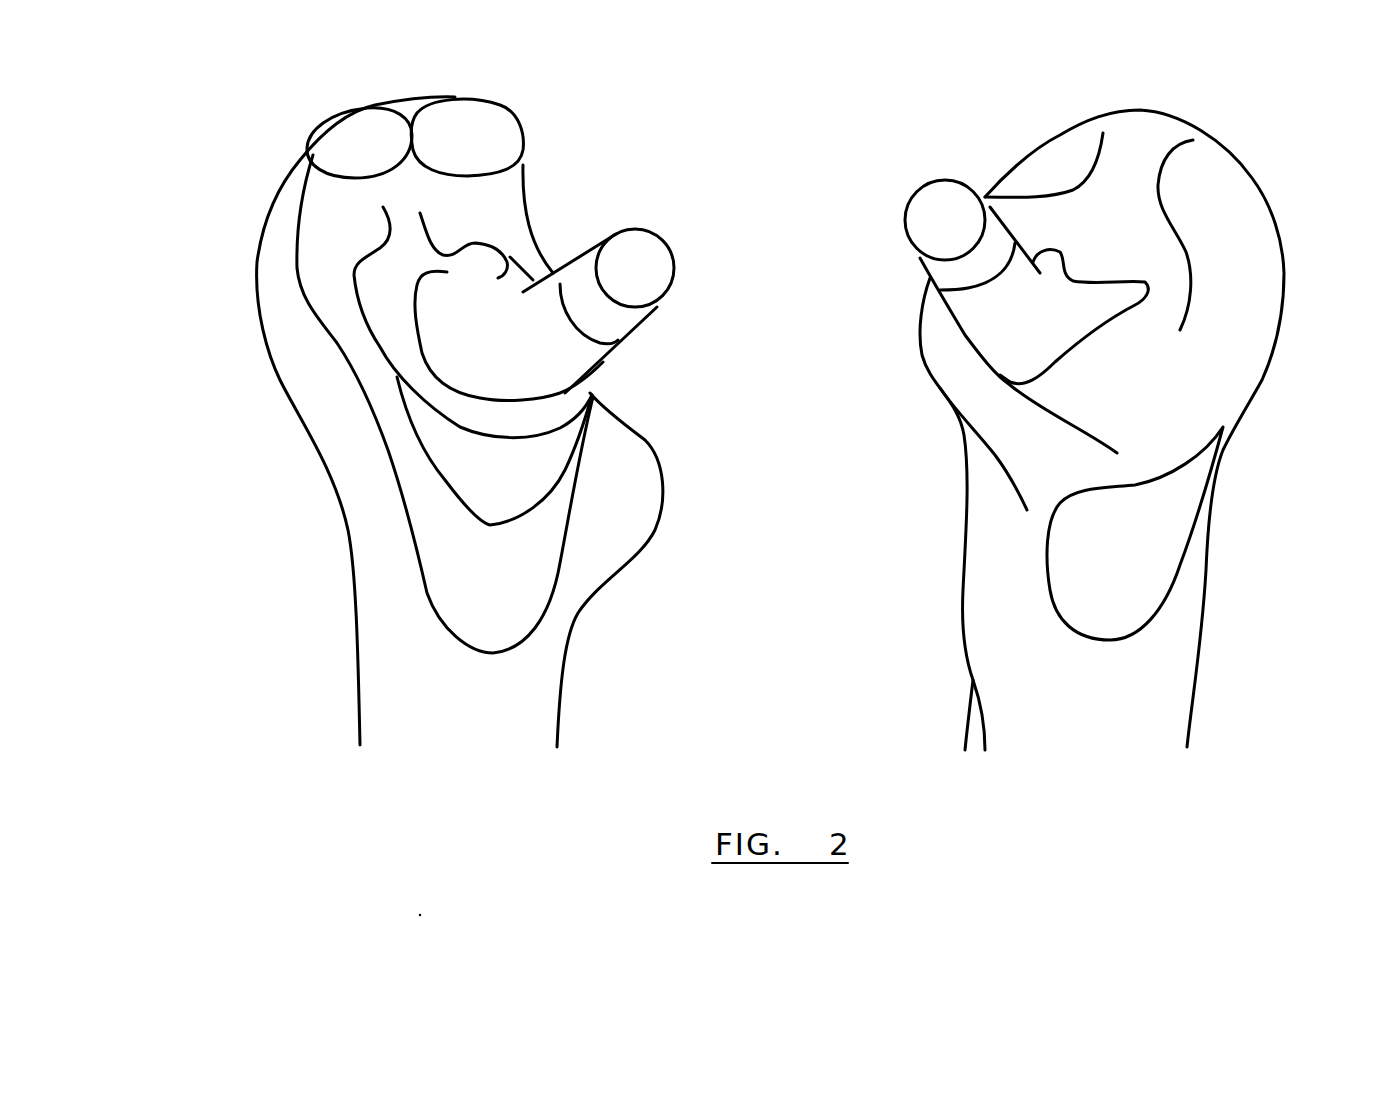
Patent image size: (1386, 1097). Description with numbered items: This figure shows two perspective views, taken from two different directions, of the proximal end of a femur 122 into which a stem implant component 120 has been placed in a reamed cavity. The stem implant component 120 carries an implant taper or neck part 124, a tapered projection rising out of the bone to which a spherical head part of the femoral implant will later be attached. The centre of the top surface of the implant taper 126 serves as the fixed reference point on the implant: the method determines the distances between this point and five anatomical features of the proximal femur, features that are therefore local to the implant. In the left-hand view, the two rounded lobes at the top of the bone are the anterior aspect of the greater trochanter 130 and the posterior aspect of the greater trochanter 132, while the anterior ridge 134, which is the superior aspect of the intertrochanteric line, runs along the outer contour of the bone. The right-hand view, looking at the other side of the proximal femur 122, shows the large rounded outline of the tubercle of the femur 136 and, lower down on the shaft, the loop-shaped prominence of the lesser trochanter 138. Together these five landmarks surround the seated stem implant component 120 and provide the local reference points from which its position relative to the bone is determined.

The stem implant component 120 is at (523, 372).
The femur 122 is at (430, 613).
The implant taper or neck part 124 is at (602, 328).
The centre of the top surface of the implant taper 126 is at (643, 260).
The anterior aspect of the greater trochanter 130 is at (358, 145).
The posterior aspect of the greater trochanter 132 is at (487, 130).
The anterior ridge 134 is at (257, 265).
The tubercle of the femur 136 is at (1270, 373).
The lesser trochanter 138 is at (1118, 595).